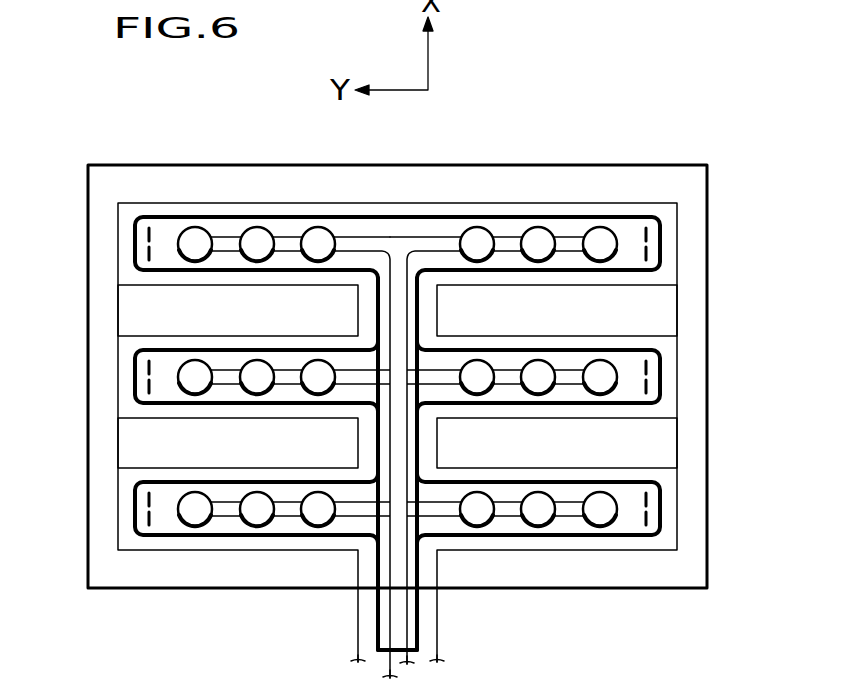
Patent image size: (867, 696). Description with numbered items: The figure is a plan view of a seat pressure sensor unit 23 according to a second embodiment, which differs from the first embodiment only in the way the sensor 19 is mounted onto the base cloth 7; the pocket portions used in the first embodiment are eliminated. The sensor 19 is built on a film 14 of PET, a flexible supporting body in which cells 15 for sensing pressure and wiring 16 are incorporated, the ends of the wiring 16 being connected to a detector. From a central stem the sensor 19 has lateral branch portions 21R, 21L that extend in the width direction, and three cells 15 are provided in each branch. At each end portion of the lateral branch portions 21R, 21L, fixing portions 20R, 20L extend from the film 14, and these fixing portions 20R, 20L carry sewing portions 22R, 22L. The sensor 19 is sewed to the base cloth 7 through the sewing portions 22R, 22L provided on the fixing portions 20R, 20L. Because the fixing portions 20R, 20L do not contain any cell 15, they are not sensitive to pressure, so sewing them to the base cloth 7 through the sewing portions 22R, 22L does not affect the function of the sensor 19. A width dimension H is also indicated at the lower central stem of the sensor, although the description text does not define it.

The base cloth 7 is at (402, 203).
The film 14 is at (422, 630).
The cells 15 is at (316, 262).
The wiring 16 is at (408, 660).
The sensor 19 is at (470, 192).
The fixing portion 20L is at (172, 230).
The fixing portion 20R is at (632, 223).
The lateral branch portion 21L is at (238, 217).
The lateral branch portion 21R is at (543, 216).
The sewing portion 22L is at (146, 250).
The sewing portion 22R is at (649, 249).
The pressure sensor unit 23 is at (308, 150).
The channel width H is at (358, 648).